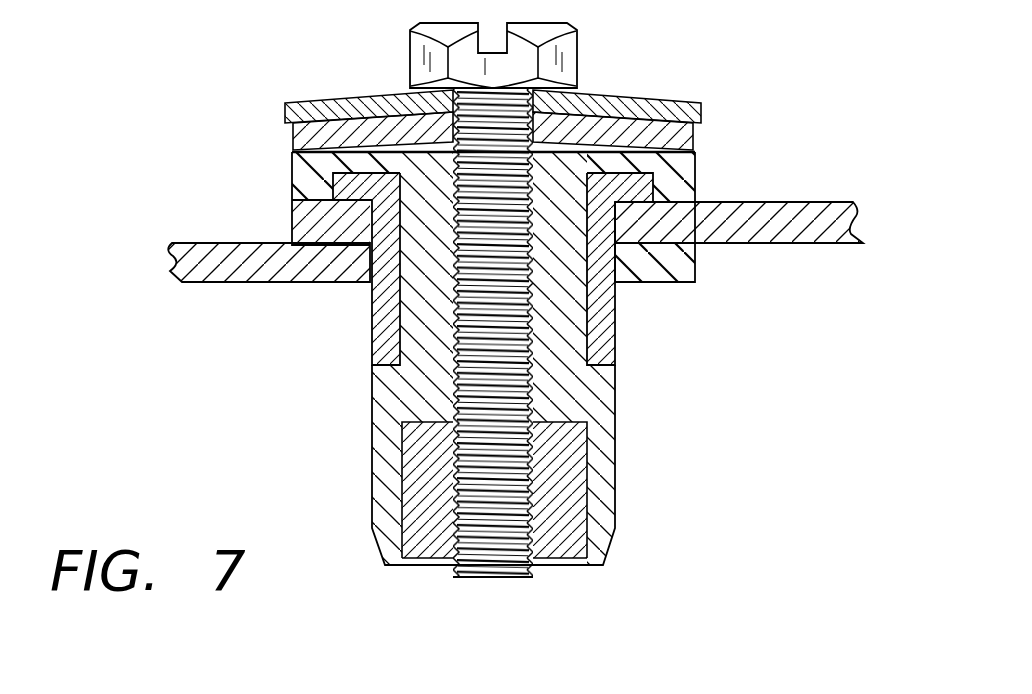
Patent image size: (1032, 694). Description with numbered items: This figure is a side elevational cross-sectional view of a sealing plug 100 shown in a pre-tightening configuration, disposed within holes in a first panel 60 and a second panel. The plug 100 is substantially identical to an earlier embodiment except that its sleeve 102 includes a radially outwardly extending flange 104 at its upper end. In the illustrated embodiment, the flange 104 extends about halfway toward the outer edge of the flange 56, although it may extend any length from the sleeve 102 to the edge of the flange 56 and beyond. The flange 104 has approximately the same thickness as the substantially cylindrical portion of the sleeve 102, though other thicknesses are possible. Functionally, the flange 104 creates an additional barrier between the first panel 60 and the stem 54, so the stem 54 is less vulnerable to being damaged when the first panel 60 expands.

The plug 100 is at (772, 100).
The flange 104 is at (350, 186).
The flange 56 is at (302, 178).
The first panel 60 is at (783, 235).
The sleeve 102 is at (378, 320).
The stem 54 is at (592, 398).